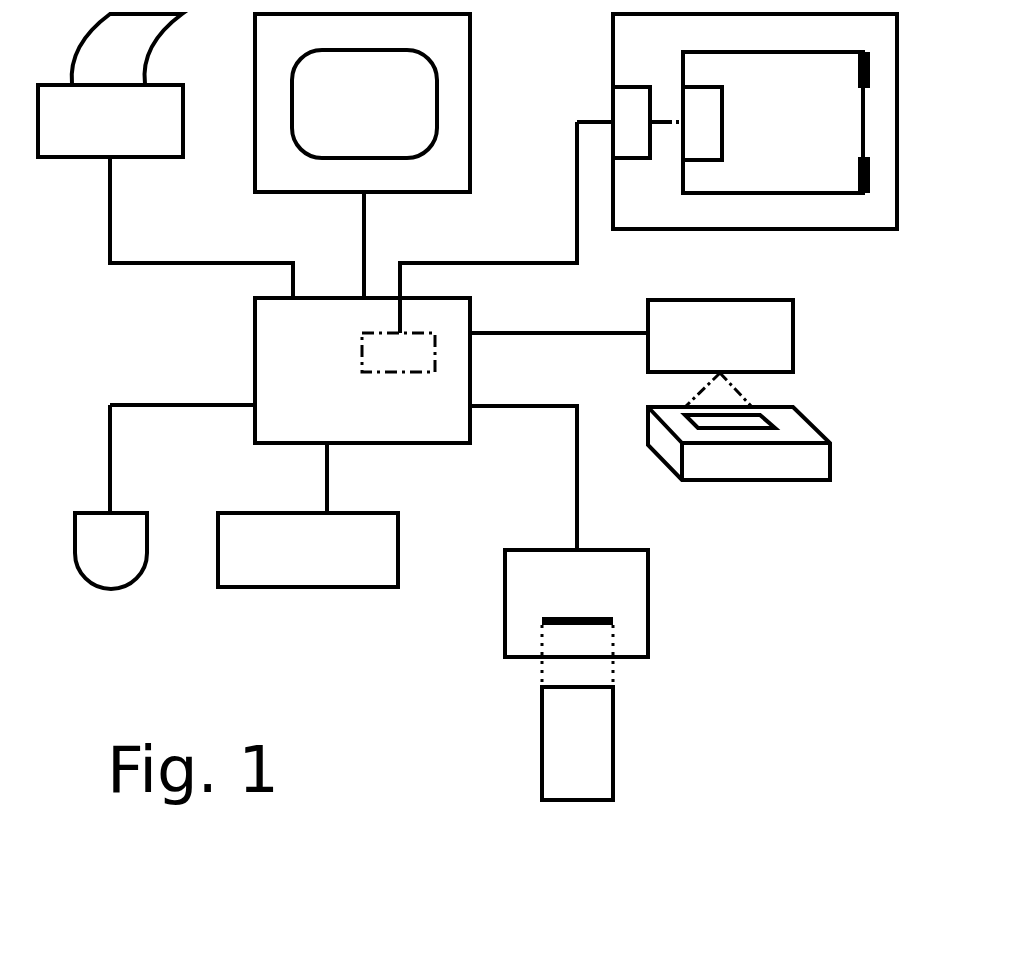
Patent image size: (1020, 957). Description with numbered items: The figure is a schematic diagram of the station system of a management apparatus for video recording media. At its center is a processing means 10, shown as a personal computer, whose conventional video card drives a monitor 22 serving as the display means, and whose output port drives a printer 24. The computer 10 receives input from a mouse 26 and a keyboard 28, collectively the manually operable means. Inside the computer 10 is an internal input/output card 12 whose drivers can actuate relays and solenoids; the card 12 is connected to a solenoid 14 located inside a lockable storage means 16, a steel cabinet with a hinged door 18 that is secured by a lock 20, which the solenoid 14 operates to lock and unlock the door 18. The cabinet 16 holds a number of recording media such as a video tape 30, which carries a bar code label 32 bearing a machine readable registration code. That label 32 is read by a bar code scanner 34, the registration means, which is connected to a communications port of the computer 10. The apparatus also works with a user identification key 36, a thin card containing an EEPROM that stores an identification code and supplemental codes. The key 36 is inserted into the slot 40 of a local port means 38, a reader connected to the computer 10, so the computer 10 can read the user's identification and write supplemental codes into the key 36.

The processing means 10 is at (252, 342).
The internal input/output card 12 is at (437, 352).
The solenoid 14 is at (622, 100).
The lockable storage means 16 is at (662, 232).
The door 18 is at (780, 195).
The lock 20 is at (702, 162).
The monitor 22 is at (254, 172).
The printer 24 is at (78, 157).
The mouse 26 is at (112, 585).
The keyboard 28 is at (302, 588).
The video tape 30 is at (718, 483).
The bar code label 32 is at (772, 425).
The bar code scanner 34 is at (793, 343).
The user identification key 36 is at (540, 742).
The local port means 38 is at (652, 640).
The slot 40 is at (583, 617).